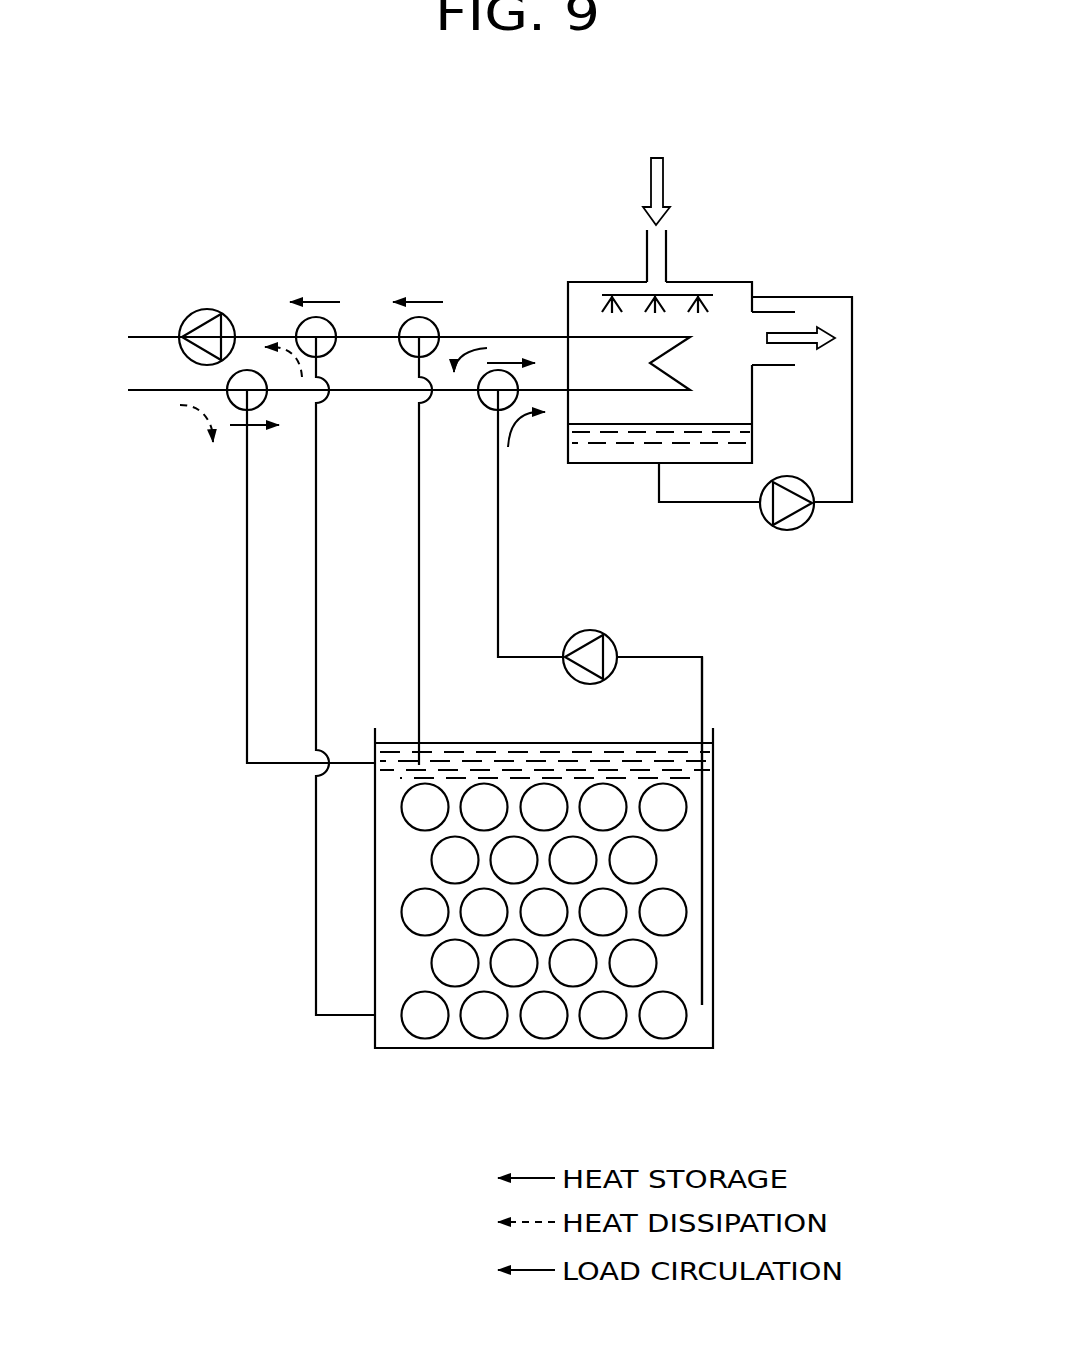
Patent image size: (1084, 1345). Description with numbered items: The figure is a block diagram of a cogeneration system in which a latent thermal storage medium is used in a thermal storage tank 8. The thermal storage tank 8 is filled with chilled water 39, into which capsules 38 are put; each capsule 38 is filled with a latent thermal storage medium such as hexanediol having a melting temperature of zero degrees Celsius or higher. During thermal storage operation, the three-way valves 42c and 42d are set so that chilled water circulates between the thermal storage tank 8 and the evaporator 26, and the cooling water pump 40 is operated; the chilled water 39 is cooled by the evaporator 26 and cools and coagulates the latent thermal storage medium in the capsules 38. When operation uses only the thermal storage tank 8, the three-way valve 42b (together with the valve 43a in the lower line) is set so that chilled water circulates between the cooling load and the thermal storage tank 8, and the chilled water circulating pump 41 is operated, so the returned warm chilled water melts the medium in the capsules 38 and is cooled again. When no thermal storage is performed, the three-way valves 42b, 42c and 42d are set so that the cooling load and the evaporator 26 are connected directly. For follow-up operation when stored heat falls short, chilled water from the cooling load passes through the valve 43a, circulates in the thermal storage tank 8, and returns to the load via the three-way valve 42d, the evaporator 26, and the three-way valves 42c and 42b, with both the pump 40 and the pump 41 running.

The thermal storage tank 8 is at (713, 803).
The evaporator 26 is at (720, 282).
The capsule 38 is at (485, 1040).
The chilled water 39 is at (698, 1048).
The cooling water pump 40 is at (590, 628).
The chilled water circulating pump 41 is at (205, 310).
The three-way valve 42b is at (317, 317).
The three-way valve 42c is at (420, 317).
The three-way valve 42d is at (482, 403).
The valve 43a is at (227, 380).